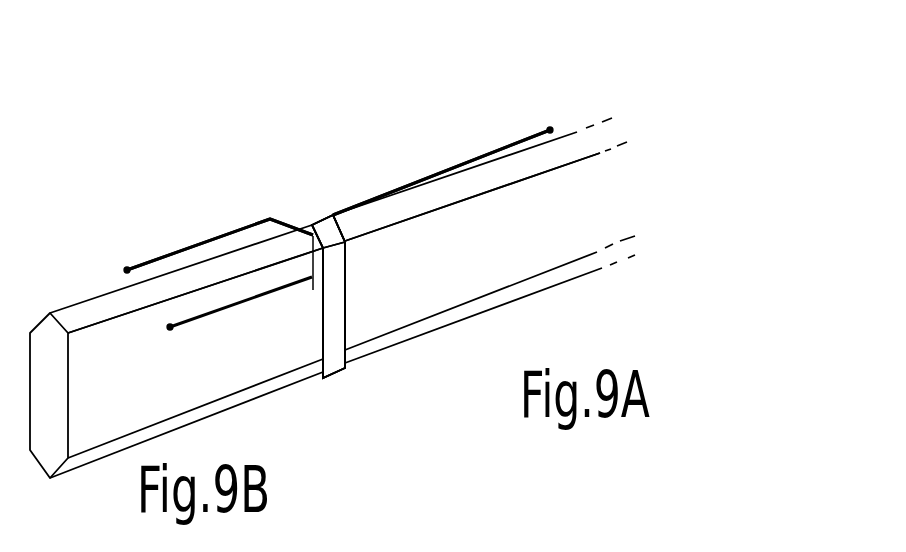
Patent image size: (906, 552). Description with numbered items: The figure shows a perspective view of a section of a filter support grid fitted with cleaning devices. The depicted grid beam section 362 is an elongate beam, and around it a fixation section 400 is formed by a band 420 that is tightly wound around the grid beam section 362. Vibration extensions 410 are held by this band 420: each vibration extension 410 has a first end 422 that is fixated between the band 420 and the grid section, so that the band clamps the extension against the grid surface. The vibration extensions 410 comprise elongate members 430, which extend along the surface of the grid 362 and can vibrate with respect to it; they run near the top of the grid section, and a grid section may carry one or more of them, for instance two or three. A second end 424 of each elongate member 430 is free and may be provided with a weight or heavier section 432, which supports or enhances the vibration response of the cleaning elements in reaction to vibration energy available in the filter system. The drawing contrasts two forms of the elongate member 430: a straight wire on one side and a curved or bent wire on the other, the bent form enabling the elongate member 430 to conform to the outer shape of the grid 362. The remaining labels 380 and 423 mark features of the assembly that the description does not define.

In FIG. 9A, the grid beam section 362 is at (470, 252).
In FIG. 9A, the fastening assembly 380 is at (380, 113).
In FIG. 9B, the fixation section 400 is at (333, 380).
In FIG. 9A, the vibration extensions 410 is at (462, 150).
In FIG. 9B, the vibration extensions 410 is at (200, 225).
In FIG. 9A, the band 420 is at (333, 333).
In FIG. 9A, the first end 422 is at (345, 213).
In FIG. 9B, the first end 422 is at (318, 270).
In FIG. 9B, the strip end 423 is at (127, 270).
In FIG. 9A, the second end 424 is at (550, 150).
In FIG. 9B, the second end 424 is at (165, 337).
In FIG. 9A, the elongate members 430 is at (502, 147).
In FIG. 9B, the elongate members 430 is at (242, 228).
In FIG. 9A, the weight 432 is at (550, 129).